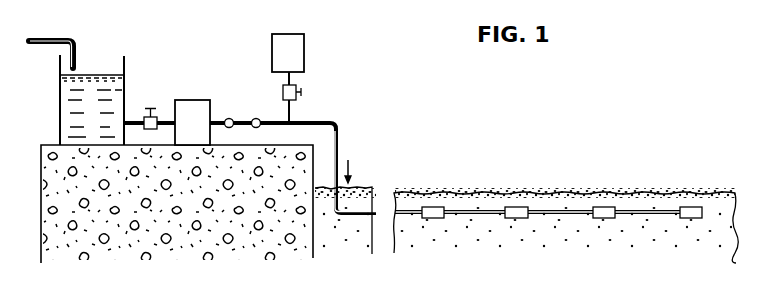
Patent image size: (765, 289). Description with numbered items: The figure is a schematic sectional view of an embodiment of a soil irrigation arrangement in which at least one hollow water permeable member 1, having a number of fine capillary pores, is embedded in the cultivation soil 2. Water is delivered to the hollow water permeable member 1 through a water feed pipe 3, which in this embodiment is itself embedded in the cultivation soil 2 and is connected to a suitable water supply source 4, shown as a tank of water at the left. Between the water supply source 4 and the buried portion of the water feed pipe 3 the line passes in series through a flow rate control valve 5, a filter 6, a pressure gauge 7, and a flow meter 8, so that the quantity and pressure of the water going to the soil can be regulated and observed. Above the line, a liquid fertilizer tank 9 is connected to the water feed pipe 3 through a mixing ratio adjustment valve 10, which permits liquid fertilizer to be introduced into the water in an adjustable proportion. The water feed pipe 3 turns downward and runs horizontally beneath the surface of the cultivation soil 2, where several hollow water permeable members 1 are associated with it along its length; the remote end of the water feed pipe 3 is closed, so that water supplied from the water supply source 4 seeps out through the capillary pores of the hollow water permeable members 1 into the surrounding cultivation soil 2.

The hollow water permeable member 1 is at (433, 207).
The cultivation soil 2 is at (643, 191).
The water feed pipe 3 is at (327, 117).
The water supply source 4 is at (125, 60).
The flow rate control valve 5 is at (151, 106).
The filter 6 is at (198, 100).
The pressure gauge 7 is at (229, 118).
The flow meter 8 is at (257, 118).
The liquid fertilizer tank 9 is at (300, 41).
The mixing ratio adjustment valve 10 is at (303, 91).